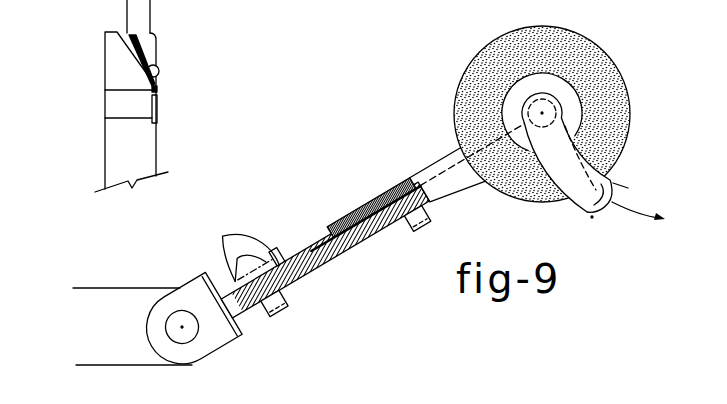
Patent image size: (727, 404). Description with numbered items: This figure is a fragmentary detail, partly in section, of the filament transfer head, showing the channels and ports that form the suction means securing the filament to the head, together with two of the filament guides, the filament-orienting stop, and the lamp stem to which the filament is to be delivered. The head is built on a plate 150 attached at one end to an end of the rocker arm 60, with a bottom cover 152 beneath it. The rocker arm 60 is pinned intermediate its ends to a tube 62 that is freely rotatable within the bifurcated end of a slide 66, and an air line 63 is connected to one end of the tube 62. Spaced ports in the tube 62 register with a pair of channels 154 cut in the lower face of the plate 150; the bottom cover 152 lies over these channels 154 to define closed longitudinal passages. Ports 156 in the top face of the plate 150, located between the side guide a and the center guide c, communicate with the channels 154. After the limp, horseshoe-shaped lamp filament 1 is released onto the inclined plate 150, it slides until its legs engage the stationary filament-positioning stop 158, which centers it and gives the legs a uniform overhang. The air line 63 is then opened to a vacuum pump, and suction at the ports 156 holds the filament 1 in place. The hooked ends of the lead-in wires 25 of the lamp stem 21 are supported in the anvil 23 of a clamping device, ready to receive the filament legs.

The lamp stem 21 is at (155, 23).
The lead-in wires 25 is at (147, 50).
The anvil 23 is at (108, 138).
The slide 66 is at (610, 60).
The tube 62 is at (630, 110).
The air line 63 is at (608, 173).
The rocker arm 60 is at (475, 192).
The plate 150 is at (378, 203).
The bottom cover 152 is at (350, 244).
The channels 154 is at (388, 222).
The ports 156 is at (278, 256).
The filament-positioning stop 158 is at (222, 338).
The lamp filament 1 is at (240, 310).
The side guide a is at (241, 245).
The center guide c is at (251, 262).